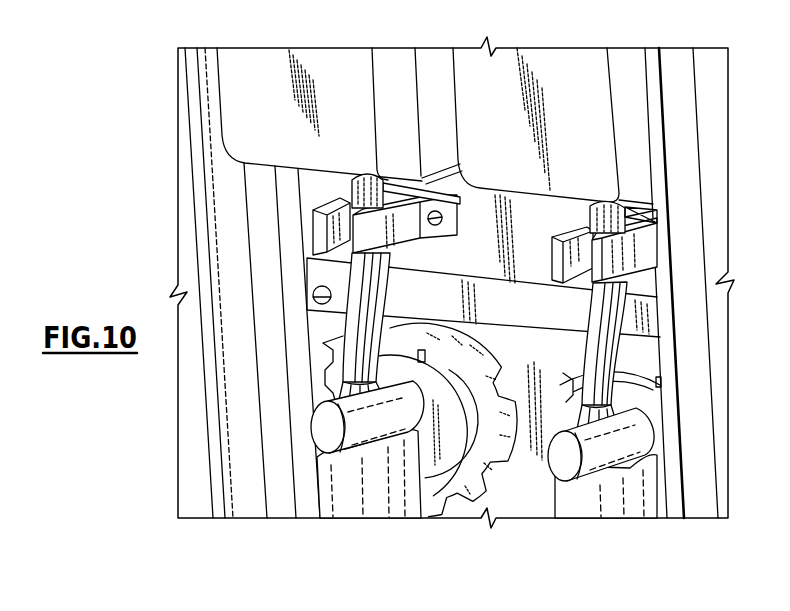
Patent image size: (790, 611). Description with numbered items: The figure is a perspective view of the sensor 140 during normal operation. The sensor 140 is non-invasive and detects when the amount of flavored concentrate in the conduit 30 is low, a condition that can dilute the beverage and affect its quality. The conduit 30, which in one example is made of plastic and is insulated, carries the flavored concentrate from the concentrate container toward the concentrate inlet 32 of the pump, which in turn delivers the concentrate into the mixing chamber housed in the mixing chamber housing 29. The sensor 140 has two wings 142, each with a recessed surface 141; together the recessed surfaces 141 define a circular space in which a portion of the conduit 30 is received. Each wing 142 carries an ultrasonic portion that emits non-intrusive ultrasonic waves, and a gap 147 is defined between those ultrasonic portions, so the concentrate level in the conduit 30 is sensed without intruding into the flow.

The mixing chamber housing 29 is at (356, 503).
The conduit 30 is at (388, 283).
The concentrate inlet 32 is at (379, 394).
The sensor 140 is at (308, 155).
The recessed surface 141 is at (345, 184).
The wing 142 is at (385, 247).
The gap 147 is at (340, 253).